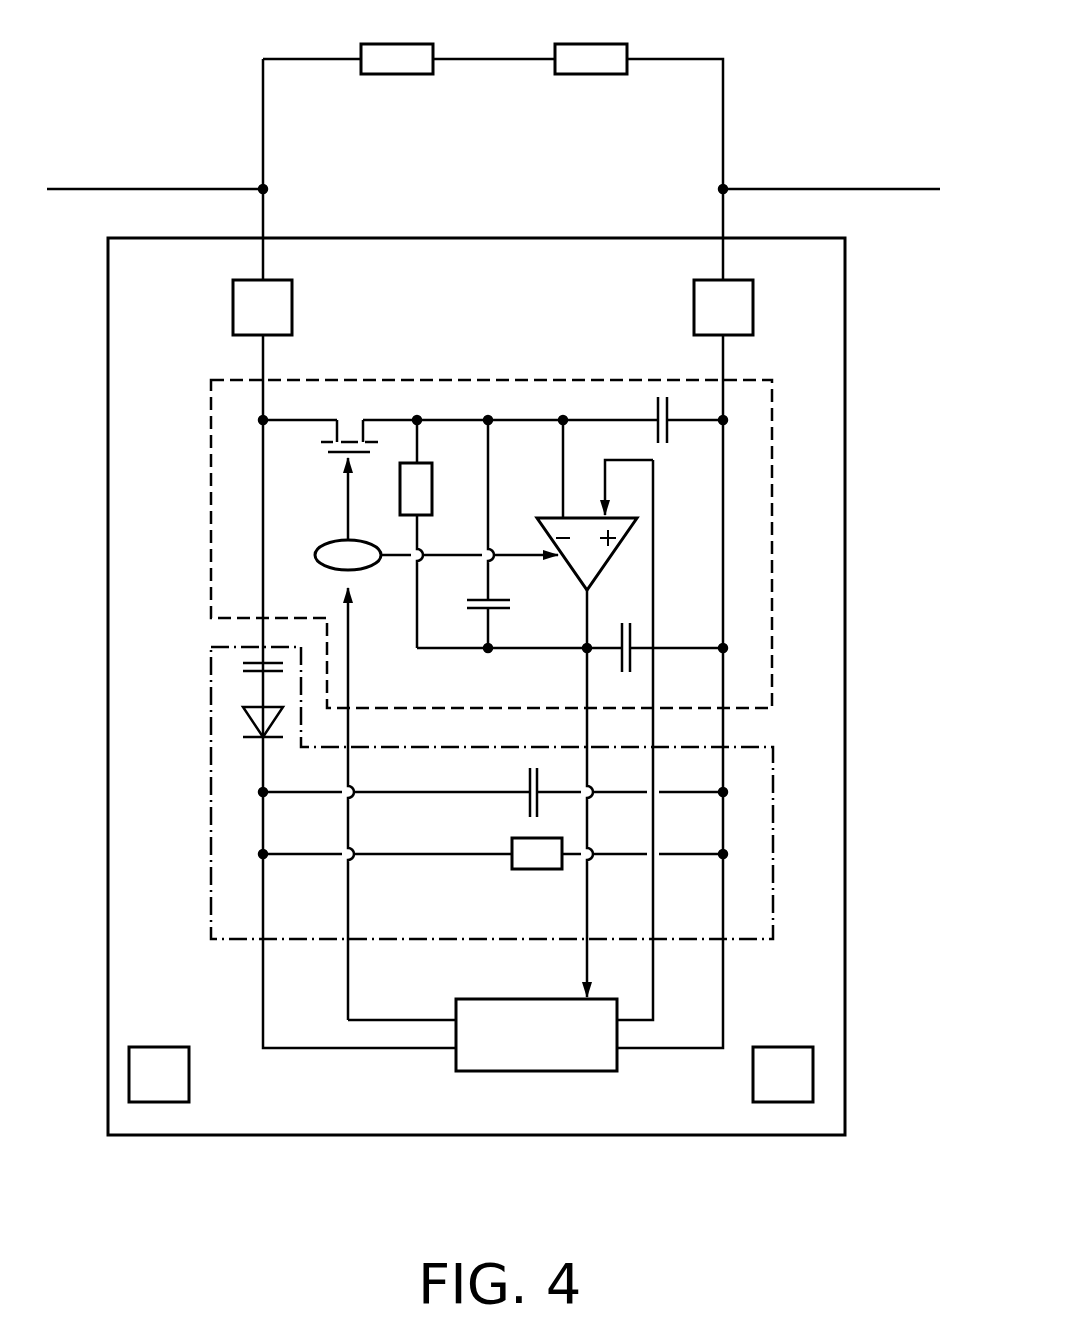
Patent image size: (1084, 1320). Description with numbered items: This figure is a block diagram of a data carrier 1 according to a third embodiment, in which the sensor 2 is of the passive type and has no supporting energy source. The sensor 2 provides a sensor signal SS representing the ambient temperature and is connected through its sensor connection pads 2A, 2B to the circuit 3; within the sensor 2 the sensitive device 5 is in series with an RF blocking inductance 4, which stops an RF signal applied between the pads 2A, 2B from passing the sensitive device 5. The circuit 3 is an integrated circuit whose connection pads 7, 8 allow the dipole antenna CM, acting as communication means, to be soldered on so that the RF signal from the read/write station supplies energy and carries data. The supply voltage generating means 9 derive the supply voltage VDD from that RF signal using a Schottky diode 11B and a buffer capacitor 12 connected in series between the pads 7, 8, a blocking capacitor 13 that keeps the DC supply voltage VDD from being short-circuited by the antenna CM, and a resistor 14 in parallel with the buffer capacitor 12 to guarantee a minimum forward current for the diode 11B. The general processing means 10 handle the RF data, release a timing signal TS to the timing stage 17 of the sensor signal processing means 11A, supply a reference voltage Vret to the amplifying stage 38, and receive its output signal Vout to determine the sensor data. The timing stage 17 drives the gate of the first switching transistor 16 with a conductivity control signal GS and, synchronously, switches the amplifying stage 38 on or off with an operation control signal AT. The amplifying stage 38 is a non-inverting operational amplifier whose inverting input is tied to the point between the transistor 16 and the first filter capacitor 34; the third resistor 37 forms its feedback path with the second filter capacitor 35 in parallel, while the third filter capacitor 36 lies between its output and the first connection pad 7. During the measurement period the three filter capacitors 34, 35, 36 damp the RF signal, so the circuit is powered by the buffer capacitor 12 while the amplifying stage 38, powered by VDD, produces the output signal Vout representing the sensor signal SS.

The data carrier 1 is at (795, 52).
The sensor 2 is at (795, 98).
The sensor connection pad 2A is at (263, 189).
The sensor connection pad 2B is at (723, 189).
The circuit 3 is at (852, 338).
The RF blocking inductance 4 is at (607, 62).
The sensitive device 5 is at (417, 62).
The connection pad 7 is at (722, 310).
The connection pad 8 is at (265, 310).
The supply voltage generating means 9 is at (210, 828).
The general processing means 10 is at (505, 1037).
The sensor signal processing means 11A is at (780, 487).
The Schottky diode 11B is at (253, 723).
The buffer capacitor 12 is at (523, 807).
The blocking capacitor 13 is at (243, 671).
The resistor 14 is at (542, 854).
The first switching transistor 16 is at (347, 432).
The timing stage 17 is at (357, 562).
The first filter capacitor 34 is at (667, 438).
The second filter capacitor 35 is at (532, 592).
The third filter capacitor 36 is at (622, 627).
The third resistor 37 is at (417, 488).
The amplifying stage 38 is at (555, 513).
The sensor signal SS is at (262, 122).
The dipole antenna CM is at (877, 177).
The conductivity control signal GS is at (347, 513).
The operation control signal AT is at (443, 552).
The timing signal TS is at (350, 655).
The supply voltage VDD is at (263, 1008).
The reference voltage Vret is at (716, 538).
The output signal Vout is at (705, 770).